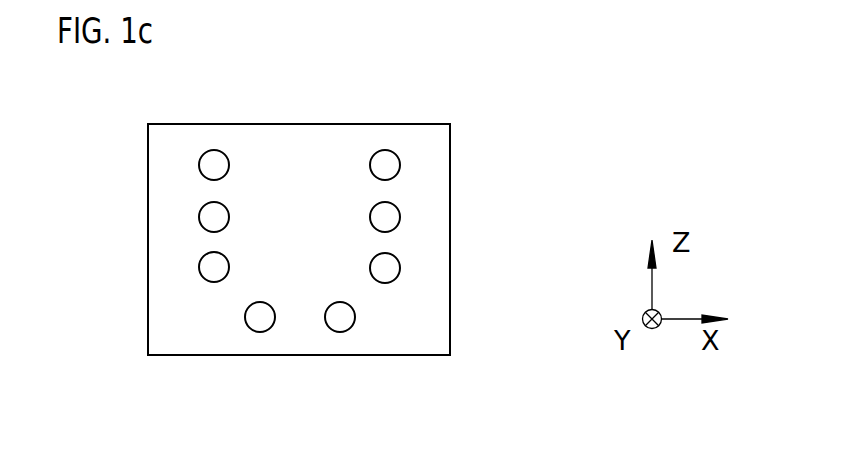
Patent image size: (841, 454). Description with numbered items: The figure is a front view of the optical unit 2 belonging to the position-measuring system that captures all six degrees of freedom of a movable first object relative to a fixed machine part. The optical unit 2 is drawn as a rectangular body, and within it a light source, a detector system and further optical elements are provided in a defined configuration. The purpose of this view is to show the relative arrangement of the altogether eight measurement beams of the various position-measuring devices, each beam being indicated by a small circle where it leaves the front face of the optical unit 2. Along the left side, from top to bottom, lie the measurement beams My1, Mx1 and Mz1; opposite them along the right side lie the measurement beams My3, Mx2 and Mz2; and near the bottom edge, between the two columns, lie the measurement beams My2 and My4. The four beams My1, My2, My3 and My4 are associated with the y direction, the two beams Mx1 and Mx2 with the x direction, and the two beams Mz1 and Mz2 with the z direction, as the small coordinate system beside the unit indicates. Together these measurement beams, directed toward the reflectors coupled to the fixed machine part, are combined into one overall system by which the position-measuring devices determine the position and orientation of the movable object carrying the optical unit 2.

The optical unit 2 is at (329, 137).
The measurement beam My1 is at (208, 168).
The measurement beam Mx1 is at (208, 220).
The measurement beam Mz1 is at (208, 270).
The measurement beam My2 is at (258, 320).
The measurement beam My3 is at (391, 164).
The measurement beam Mx2 is at (391, 217).
The measurement beam Mz2 is at (391, 268).
The measurement beam My4 is at (338, 318).